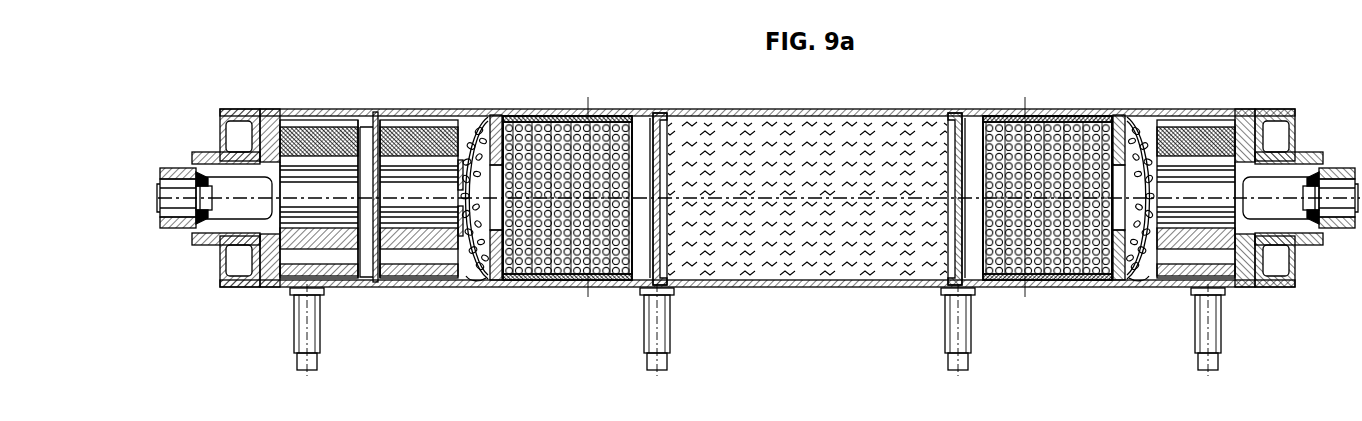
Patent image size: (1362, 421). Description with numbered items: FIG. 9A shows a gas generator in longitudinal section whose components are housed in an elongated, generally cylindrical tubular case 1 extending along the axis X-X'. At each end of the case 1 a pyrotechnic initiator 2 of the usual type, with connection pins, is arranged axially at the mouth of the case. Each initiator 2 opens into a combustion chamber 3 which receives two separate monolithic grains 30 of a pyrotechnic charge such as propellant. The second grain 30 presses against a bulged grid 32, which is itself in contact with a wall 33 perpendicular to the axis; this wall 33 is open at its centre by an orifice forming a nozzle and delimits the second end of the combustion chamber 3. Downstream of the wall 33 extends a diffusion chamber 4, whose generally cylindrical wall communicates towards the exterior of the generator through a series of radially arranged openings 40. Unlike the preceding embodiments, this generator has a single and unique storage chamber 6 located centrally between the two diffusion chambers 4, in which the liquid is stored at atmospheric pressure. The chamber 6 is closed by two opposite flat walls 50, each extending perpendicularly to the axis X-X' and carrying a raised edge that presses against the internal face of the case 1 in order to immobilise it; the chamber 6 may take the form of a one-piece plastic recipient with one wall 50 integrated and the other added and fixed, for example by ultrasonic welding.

The tubular case 1 is at (487, 65).
The pyrotechnic initiator 2 is at (247, 188).
The combustion chamber 3 is at (390, 101).
The diffusion chamber 4 is at (565, 283).
The storage chamber 6 is at (811, 152).
The monolithic grain 30 is at (336, 278).
The bulged grid 32 is at (466, 276).
The wall 33 is at (488, 278).
The openings 40 is at (592, 110).
The flat wall 50 is at (667, 283).